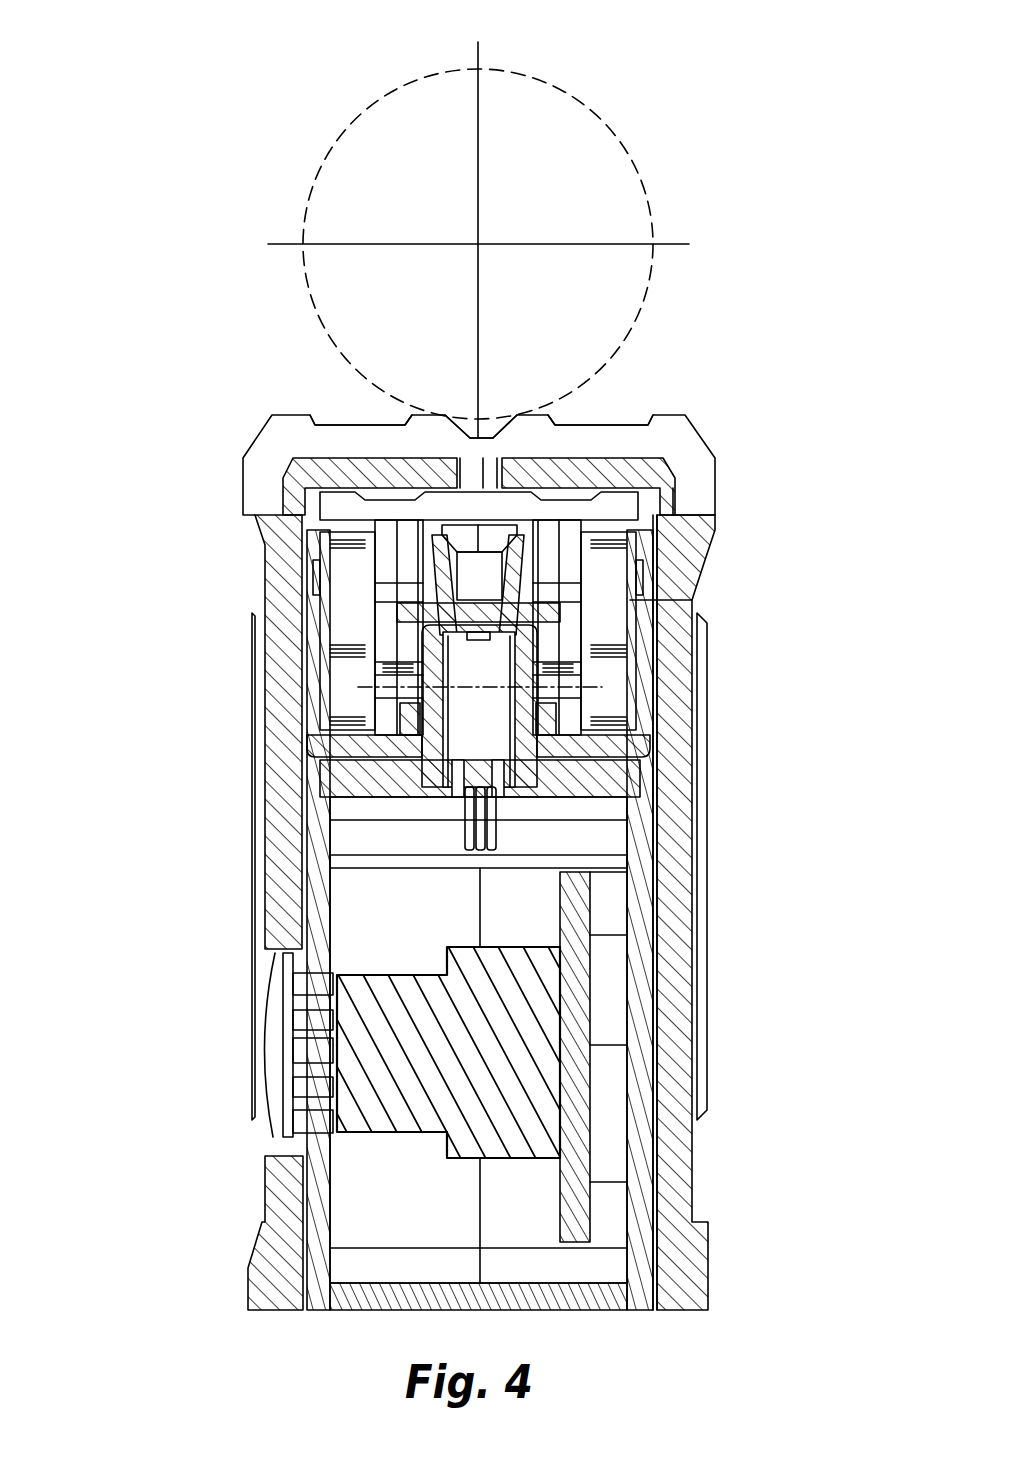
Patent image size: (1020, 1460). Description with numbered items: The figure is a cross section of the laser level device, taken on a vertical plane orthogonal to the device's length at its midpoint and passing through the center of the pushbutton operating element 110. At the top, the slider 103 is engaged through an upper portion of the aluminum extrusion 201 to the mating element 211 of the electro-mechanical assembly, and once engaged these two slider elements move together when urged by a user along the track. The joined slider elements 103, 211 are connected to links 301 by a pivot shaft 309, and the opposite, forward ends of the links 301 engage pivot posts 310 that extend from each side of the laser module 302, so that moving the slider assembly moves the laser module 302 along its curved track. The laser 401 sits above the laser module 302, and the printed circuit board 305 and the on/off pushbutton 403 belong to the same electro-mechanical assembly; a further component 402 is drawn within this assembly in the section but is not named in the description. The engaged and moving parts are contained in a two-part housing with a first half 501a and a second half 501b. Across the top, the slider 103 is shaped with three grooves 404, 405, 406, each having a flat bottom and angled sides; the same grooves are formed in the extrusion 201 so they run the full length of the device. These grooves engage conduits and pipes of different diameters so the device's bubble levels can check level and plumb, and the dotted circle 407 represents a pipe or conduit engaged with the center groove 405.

The slider 103 is at (665, 430).
The pushbutton operating element 110 is at (278, 1000).
The extrusion 201 is at (258, 553).
The mating element 211 is at (605, 510).
The links 301 is at (332, 632).
The laser module 302 is at (350, 777).
The printed circuit board 305 is at (640, 1050).
The pivot shaft 309 is at (307, 575).
The pivot posts 310 is at (370, 697).
The laser 401 is at (492, 731).
The circuit board 402 is at (642, 866).
The on/off pushbutton 403 is at (376, 1095).
The groove 404 is at (362, 408).
The center groove 405 is at (483, 410).
The groove 406 is at (613, 408).
The dotted circle 407 is at (303, 218).
The first half 501a is at (317, 900).
The second half 501b is at (647, 996).